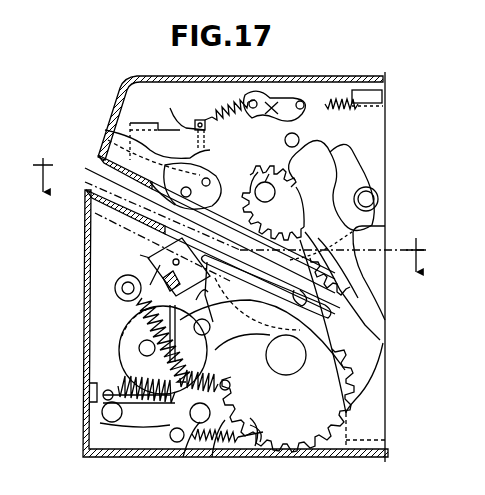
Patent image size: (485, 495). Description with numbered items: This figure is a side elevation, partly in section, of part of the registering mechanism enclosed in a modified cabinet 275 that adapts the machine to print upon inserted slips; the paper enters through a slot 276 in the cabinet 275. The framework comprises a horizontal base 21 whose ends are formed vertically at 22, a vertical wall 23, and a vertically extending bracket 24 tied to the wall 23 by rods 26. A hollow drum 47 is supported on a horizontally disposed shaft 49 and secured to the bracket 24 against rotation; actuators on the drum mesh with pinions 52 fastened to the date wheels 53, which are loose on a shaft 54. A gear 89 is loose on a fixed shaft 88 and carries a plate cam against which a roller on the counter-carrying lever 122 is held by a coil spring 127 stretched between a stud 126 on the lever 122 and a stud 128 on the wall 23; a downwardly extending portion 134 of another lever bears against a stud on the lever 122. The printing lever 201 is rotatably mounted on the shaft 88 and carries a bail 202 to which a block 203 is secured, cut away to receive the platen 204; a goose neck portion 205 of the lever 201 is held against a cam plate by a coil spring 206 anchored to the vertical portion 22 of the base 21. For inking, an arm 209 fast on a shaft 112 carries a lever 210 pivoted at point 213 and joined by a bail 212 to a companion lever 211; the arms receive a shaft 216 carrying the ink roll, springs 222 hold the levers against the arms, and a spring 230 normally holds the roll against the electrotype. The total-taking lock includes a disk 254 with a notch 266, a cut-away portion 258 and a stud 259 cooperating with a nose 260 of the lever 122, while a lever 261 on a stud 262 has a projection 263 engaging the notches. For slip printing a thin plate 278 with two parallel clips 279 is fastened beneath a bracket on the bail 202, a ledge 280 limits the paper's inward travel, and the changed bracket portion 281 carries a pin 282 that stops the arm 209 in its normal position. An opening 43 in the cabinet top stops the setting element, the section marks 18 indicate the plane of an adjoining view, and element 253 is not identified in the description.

The section line 18- 18 is at (231, 232).
The horizontal base 21 is at (330, 457).
The vertical portion of base 22 is at (100, 409).
The vertical wall 23 is at (120, 340).
The bracket 24 is at (372, 433).
The rods 26 is at (375, 99).
The opening 43 is at (222, 460).
The hollow hub or drum 47 is at (352, 158).
The shaft 49 is at (379, 201).
The pinions 52 is at (285, 210).
The date wheels 53 is at (306, 236).
The shaft 54 is at (266, 177).
The fixed shaft 88 is at (300, 346).
The gear 89 is at (355, 396).
The shaft 112 is at (299, 141).
The lever 122 is at (360, 364).
The stud 126 is at (193, 460).
The coil spring 127 is at (115, 294).
The stud 128 is at (115, 286).
The downwardly extending portion 134 is at (262, 460).
The lever 201 is at (288, 440).
The bail 202 is at (179, 267).
The block 203 is at (148, 256).
The platen 204 is at (160, 258).
The goose neck portion 205 is at (370, 313).
The coil spring 206 is at (231, 385).
The arm 209 is at (275, 100).
The lever 210 is at (182, 111).
The lever 211 is at (218, 292).
The bail 212 is at (180, 186).
The point 213 is at (210, 190).
The shaft 216 is at (205, 180).
The springs 222 is at (218, 112).
The spring 230 is at (332, 95).
The pin 253 is at (212, 325).
The disk 254 is at (130, 365).
The cut away portion 258 is at (215, 333).
The stud 259 is at (130, 332).
The nose 260 is at (103, 389).
The lever 261 is at (125, 458).
The stud 262 is at (98, 423).
The projection 263 is at (145, 460).
The notch 266 is at (138, 348).
The cabinet 275 is at (250, 76).
The slot 276 is at (95, 184).
The thin plate 278 is at (266, 282).
The clips 279 is at (372, 331).
The ledge 280 is at (301, 276).
The changed portion of bracket 281 is at (108, 129).
The pin 282 is at (154, 131).